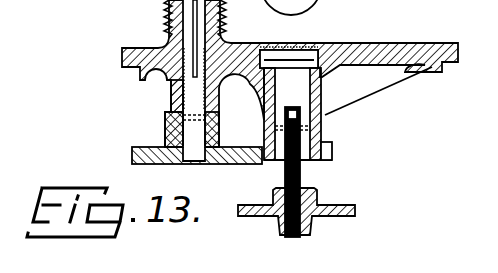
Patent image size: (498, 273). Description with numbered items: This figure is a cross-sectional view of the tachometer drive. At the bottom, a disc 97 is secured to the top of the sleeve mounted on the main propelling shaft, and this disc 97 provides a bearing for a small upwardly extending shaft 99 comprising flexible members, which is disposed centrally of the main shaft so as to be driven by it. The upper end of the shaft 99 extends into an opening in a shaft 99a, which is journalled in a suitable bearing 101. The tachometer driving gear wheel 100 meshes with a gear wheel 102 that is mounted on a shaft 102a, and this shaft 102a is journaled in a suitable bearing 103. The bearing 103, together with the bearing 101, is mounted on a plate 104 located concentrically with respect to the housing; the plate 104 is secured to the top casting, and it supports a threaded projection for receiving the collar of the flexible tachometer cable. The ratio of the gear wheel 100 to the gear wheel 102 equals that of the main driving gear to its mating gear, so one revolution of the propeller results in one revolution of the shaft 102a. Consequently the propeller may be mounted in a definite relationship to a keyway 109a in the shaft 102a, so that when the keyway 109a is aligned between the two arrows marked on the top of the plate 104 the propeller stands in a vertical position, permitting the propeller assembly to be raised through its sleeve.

The disc 97 is at (340, 205).
The small upwardly extending shaft 99 is at (301, 176).
The shaft 99a is at (314, 106).
The gear wheel 100 is at (332, 152).
The bearing 101 is at (312, 100).
The gear wheel 102 is at (132, 157).
The shaft 102a is at (176, 108).
The bearing 103 is at (195, 98).
The plate 104 is at (367, 58).
The keyway 109a is at (193, 33).